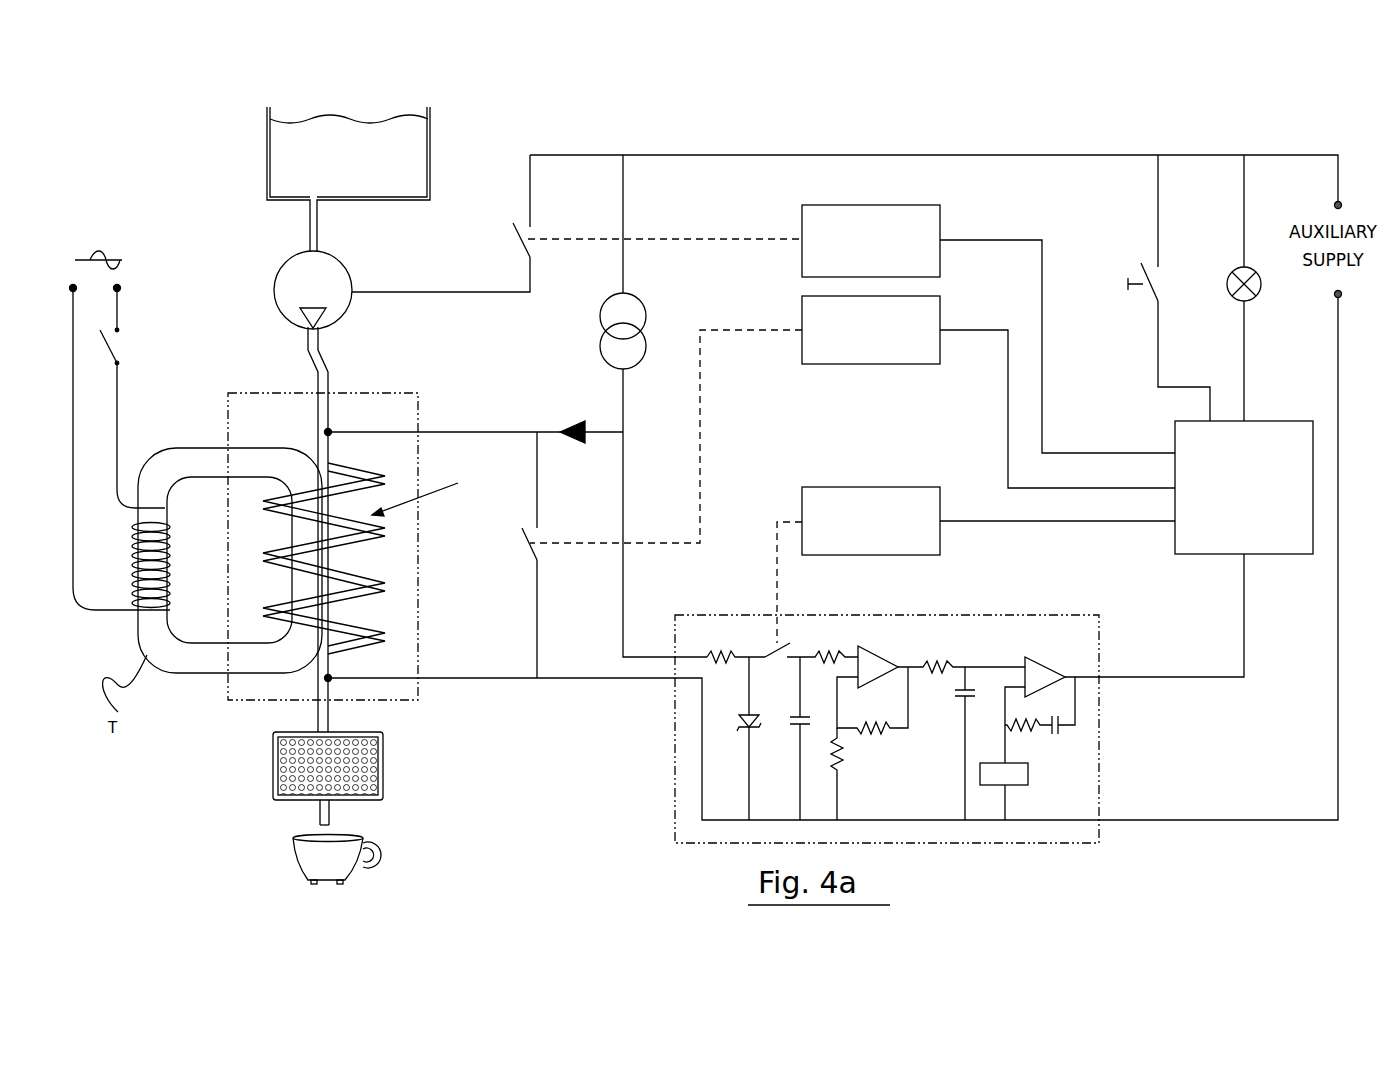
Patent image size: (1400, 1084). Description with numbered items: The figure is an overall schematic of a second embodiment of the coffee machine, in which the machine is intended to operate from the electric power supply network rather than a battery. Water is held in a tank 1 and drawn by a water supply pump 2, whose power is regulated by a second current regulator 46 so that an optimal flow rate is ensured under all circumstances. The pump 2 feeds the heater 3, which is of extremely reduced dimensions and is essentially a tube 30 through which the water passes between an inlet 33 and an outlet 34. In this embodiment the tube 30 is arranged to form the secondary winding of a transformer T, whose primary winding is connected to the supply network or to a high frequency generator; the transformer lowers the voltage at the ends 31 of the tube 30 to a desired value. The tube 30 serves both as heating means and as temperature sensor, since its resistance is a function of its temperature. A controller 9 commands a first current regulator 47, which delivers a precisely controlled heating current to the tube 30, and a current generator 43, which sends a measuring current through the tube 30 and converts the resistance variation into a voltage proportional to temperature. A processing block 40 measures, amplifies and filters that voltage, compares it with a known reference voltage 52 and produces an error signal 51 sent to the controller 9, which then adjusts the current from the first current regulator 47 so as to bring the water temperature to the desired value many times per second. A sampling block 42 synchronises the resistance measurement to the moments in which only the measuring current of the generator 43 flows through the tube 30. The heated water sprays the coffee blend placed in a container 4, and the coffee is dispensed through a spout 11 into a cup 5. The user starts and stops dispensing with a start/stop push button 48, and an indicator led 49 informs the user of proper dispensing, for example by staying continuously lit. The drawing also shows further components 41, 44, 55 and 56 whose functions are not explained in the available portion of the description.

The tank 1 is at (430, 130).
The water supply pump 2 is at (340, 258).
The heater 3 is at (367, 568).
The container 4 is at (383, 768).
The cup 5 is at (382, 853).
The controller 9 is at (1283, 419).
The spout 11 is at (325, 820).
The tube 30 is at (283, 545).
The ends 31 is at (328, 432).
The inlet 33 is at (325, 380).
The outlet 34 is at (330, 710).
The processing block 40 is at (927, 749).
The signal arrow 41 is at (572, 441).
The sampling block 42 is at (940, 487).
The current generator 43 is at (600, 312).
The pump switch 44 is at (518, 233).
The second current regulator 46 is at (940, 206).
The first current regulator 47 is at (940, 297).
The start/stop push button 48 is at (1158, 301).
The indicator led 49 is at (1258, 296).
The error signal 51 is at (1163, 676).
The reference voltage 52 is at (1028, 772).
The heater switch 55 is at (540, 561).
The mains switch 56 is at (112, 344).